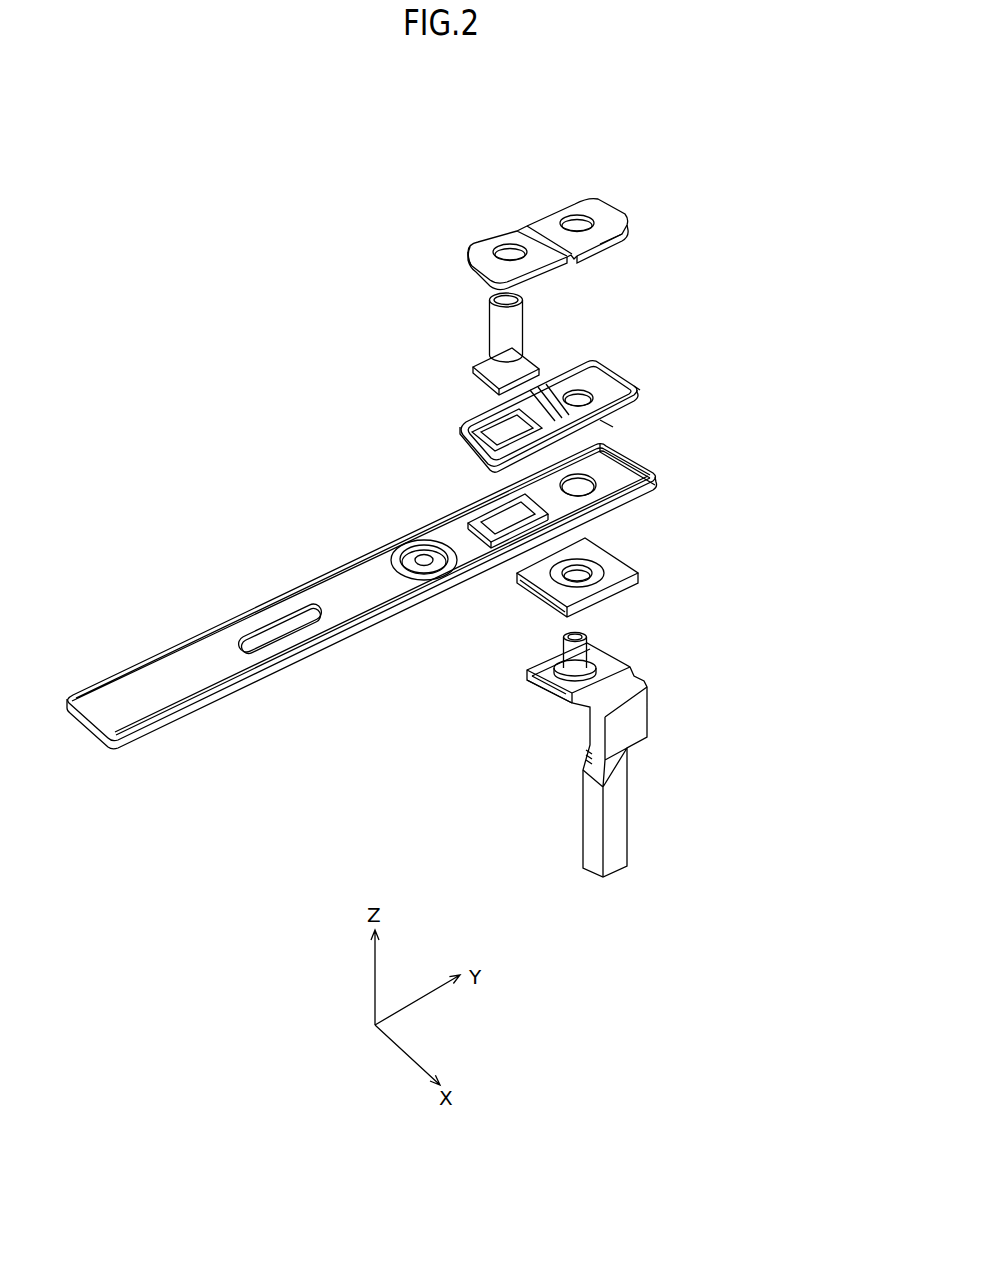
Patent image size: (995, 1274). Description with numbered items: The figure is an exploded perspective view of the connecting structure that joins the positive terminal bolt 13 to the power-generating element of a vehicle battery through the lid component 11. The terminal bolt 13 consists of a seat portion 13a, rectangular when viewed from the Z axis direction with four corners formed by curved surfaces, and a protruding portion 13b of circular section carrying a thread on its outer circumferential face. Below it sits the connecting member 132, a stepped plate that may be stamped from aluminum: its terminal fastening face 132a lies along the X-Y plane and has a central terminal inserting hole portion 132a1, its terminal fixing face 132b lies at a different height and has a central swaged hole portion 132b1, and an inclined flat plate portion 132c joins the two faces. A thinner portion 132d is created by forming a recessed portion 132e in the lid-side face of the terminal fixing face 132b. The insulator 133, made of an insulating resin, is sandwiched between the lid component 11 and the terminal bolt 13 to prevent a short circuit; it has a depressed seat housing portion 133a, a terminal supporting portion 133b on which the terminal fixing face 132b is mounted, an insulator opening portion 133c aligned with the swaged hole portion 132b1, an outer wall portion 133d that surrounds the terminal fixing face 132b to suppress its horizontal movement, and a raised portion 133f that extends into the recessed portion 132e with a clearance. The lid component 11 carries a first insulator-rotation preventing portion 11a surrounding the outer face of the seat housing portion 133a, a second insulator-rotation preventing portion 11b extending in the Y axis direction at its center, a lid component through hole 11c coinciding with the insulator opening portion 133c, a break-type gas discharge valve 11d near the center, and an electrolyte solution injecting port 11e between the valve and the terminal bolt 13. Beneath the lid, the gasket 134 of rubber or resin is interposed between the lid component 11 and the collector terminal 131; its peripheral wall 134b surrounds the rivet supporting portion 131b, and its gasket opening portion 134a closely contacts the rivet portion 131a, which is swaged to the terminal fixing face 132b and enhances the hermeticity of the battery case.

The lid component 11 is at (380, 599).
The first insulator-rotation preventing portion 11a is at (470, 547).
The second insulator-rotation preventing portion 11b is at (505, 522).
The lid component through hole 11c is at (613, 512).
The gas discharge valve 11d is at (277, 625).
The electrolyte solution injecting port 11e is at (400, 556).
The terminal bolt (positive electrode) 13 is at (512, 344).
The seat portion 13a is at (482, 377).
The protruding portion 13b is at (497, 333).
The collector terminal (positive electrode) 131 is at (616, 755).
The rivet portion 131a is at (540, 697).
The rivet supporting portion 131b is at (603, 668).
The connecting member (positive electrode) 132 is at (546, 219).
The terminal fastening face 132a is at (471, 241).
The terminal inserting hole portion 132a1 is at (475, 260).
The terminal fixing face 132b is at (622, 246).
The swaged hole portion 132b1 is at (603, 252).
The inclined flat plate portion 132c is at (528, 226).
The thinner portion 132d is at (575, 220).
The recessed portion 132e is at (573, 258).
The insulator 133 is at (565, 409).
The seat housing portion 133a is at (463, 425).
The terminal supporting portion 133b is at (607, 388).
The insulator opening portion 133c is at (607, 413).
The outer wall portion 133d is at (613, 427).
The raised portion 133f is at (537, 395).
The gasket (second gasket) 134 is at (595, 617).
The gasket opening portion 134a is at (595, 573).
The peripheral wall 134b is at (540, 595).